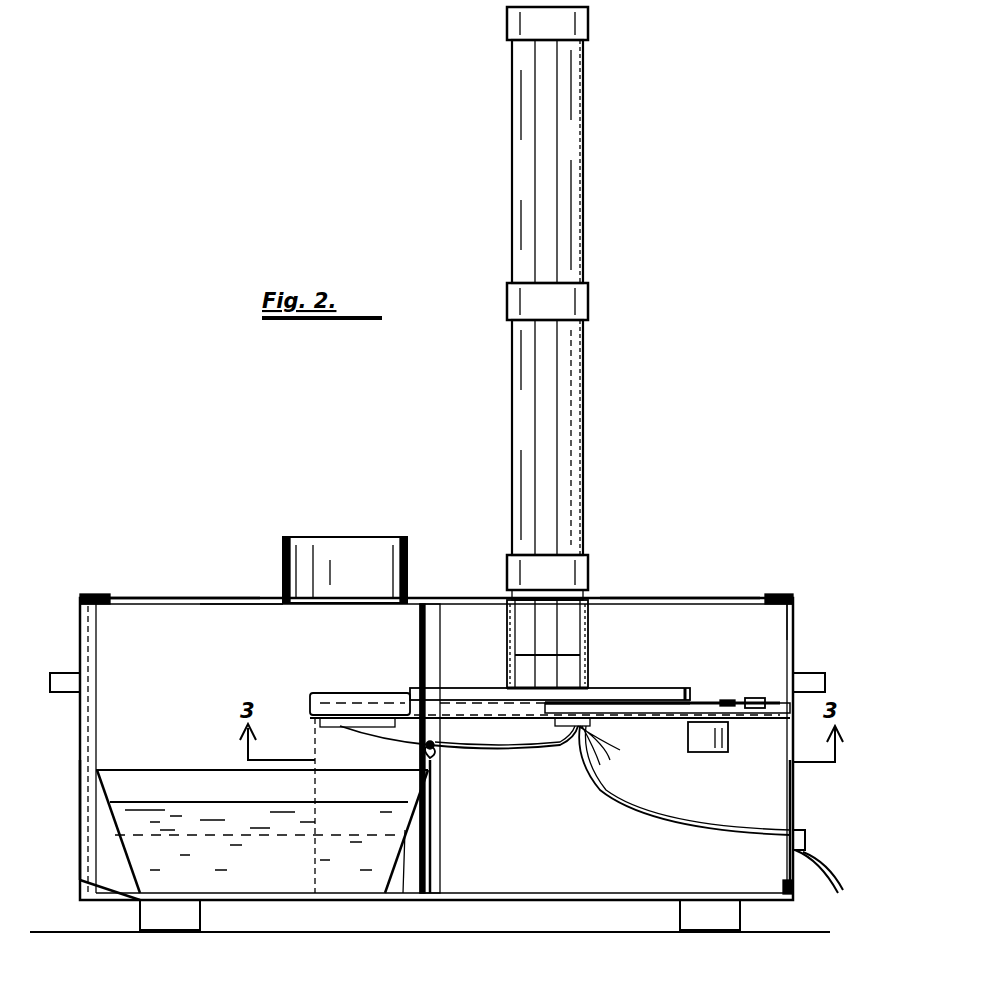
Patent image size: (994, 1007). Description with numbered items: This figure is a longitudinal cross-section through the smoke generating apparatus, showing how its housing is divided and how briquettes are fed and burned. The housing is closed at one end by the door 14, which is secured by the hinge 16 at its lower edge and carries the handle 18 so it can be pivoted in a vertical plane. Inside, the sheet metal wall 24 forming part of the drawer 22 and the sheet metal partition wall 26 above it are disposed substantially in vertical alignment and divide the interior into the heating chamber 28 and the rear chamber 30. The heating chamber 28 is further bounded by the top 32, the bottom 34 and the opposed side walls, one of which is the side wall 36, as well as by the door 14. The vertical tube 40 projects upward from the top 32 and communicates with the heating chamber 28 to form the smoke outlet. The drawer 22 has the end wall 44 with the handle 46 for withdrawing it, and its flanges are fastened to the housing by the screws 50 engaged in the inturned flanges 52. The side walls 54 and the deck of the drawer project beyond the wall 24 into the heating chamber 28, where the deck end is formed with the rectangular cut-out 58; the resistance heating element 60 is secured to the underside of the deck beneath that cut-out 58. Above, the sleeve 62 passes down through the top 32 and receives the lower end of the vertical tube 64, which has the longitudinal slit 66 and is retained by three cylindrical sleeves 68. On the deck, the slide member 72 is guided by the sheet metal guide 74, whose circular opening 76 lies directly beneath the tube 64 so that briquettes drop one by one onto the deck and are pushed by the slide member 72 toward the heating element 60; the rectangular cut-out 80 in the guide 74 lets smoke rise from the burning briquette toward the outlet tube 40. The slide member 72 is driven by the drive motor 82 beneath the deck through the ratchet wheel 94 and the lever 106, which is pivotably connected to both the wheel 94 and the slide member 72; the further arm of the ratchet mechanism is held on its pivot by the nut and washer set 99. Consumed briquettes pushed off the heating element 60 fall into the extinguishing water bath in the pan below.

The door 14 is at (84, 812).
The hinge 16 is at (86, 900).
The handle 18 is at (64, 668).
The drawer 22 is at (800, 642).
The sheet metal wall 24 is at (440, 798).
The sheet metal partition wall 26 is at (420, 640).
The heating chamber 28 is at (176, 632).
The rear chamber 30 is at (700, 610).
The top 32 is at (248, 600).
The bottom 34 is at (344, 898).
The side wall 36 is at (226, 1001).
The vertical tube 40 is at (408, 560).
The end wall 44 is at (794, 800).
The handle 46 is at (812, 680).
The screws 50 is at (790, 625).
The inturned flanges 52 is at (788, 618).
The side walls 54 is at (518, 878).
The rectangular cut-out 58 is at (318, 726).
The resistance heating element 60 is at (325, 722).
The sleeve 62 is at (588, 622).
The vertical tube 64 is at (574, 444).
The longitudinal slit 66 is at (560, 202).
The cylindrical sleeves 68 is at (590, 22).
The slide member 72 is at (628, 720).
The sheet metal guide 74 is at (496, 686).
The circular opening 76 is at (590, 664).
The rectangular cut-out 80 is at (402, 690).
The drive motor 82 is at (705, 752).
The ratchet wheel 94 is at (760, 700).
The nut and washer set 99 is at (184, 778).
The lever 106 is at (708, 706).